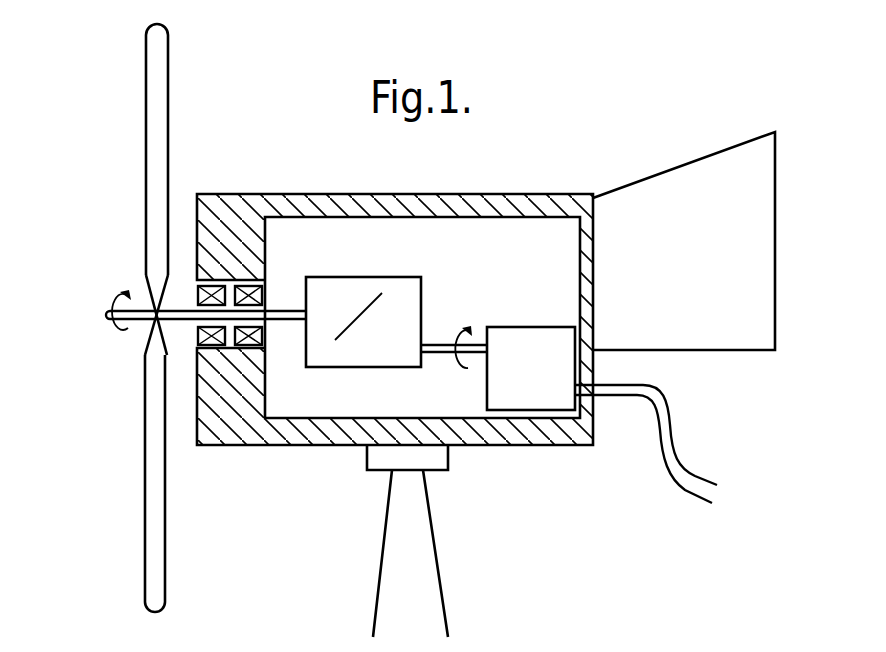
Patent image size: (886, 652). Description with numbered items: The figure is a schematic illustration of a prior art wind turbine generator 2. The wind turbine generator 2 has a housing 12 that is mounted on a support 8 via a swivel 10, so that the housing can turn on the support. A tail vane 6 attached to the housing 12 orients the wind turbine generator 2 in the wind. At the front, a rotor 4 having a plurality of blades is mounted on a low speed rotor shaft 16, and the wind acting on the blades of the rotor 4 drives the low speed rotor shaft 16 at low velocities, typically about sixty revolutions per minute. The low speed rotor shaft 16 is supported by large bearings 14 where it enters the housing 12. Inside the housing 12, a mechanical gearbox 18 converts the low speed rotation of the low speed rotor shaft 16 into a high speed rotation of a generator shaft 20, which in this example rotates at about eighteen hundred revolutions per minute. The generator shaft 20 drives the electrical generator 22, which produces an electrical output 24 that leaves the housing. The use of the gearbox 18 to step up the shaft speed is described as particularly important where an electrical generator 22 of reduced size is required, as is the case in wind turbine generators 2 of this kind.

The wind turbine generator 2 is at (512, 159).
The rotor 4 is at (147, 44).
The tail vane 6 is at (762, 228).
The support 8 is at (423, 600).
The swivel 10 is at (450, 460).
The housing 12 is at (321, 204).
The large bearings 14 is at (190, 331).
The low speed rotor shaft 16 is at (105, 313).
The mechanical gearbox 18 is at (383, 286).
The generator shaft 20 is at (437, 345).
The electrical generator 22 is at (538, 388).
The electrical output 24 is at (709, 490).